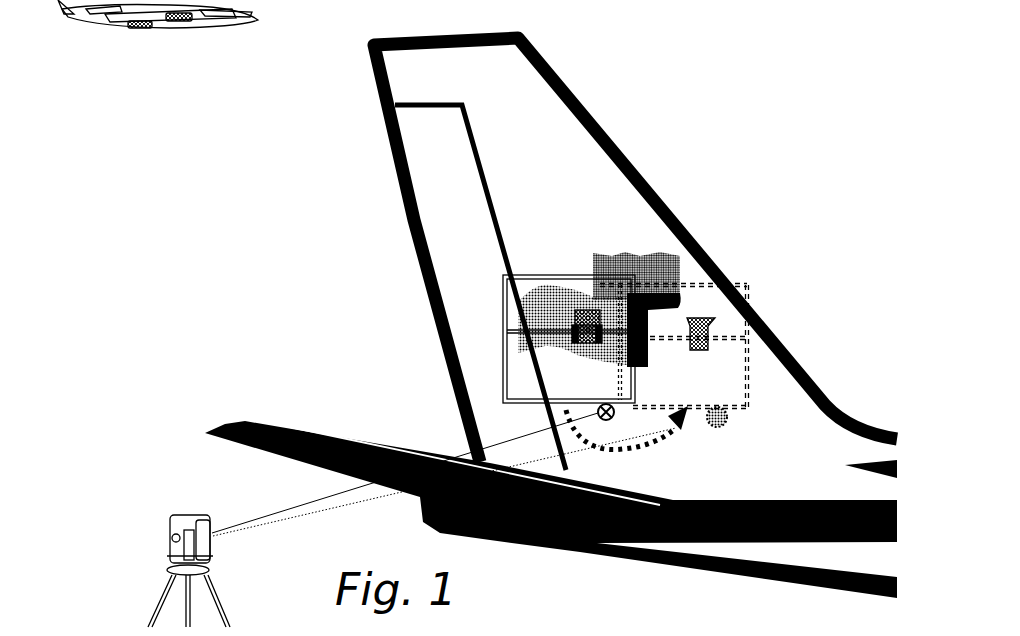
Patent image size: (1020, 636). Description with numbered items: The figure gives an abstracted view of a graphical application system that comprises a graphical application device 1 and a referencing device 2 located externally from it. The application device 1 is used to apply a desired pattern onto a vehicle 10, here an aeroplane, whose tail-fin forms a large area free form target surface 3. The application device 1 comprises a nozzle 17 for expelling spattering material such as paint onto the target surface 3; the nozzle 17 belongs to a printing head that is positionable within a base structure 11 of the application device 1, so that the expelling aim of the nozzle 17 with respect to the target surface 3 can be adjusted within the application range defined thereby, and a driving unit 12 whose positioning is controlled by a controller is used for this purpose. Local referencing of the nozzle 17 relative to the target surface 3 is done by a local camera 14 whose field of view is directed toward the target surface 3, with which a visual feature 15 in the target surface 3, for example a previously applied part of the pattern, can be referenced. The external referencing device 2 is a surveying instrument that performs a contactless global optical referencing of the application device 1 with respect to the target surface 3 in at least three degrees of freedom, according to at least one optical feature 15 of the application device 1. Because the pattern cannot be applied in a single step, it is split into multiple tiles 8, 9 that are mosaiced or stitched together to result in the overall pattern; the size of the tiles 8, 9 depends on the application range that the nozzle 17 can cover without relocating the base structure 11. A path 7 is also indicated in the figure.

The graphical application device 1 is at (562, 265).
The referencing device 2 is at (168, 532).
The target surface 3 is at (529, 190).
The deflection path 7 is at (637, 450).
The tile 8 is at (645, 252).
The tile 9 is at (685, 283).
The vehicle 10 is at (205, 35).
The base structure 11 is at (580, 290).
The driving unit 12 is at (745, 336).
The local camera 14 is at (703, 317).
The visual feature 15 is at (727, 414).
The nozzle 17 is at (712, 335).